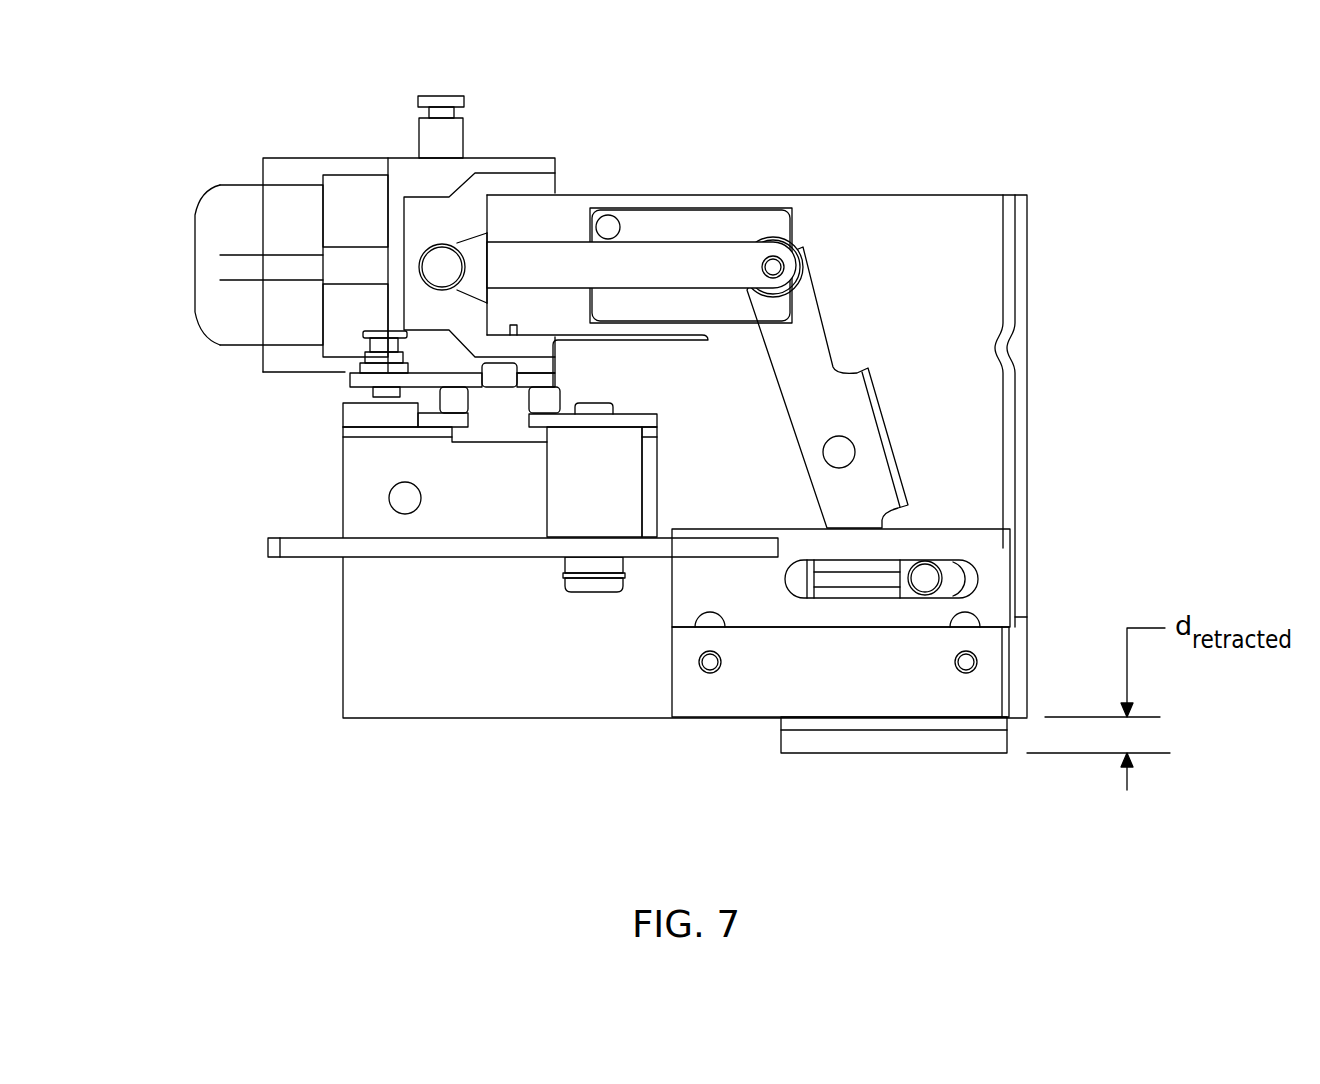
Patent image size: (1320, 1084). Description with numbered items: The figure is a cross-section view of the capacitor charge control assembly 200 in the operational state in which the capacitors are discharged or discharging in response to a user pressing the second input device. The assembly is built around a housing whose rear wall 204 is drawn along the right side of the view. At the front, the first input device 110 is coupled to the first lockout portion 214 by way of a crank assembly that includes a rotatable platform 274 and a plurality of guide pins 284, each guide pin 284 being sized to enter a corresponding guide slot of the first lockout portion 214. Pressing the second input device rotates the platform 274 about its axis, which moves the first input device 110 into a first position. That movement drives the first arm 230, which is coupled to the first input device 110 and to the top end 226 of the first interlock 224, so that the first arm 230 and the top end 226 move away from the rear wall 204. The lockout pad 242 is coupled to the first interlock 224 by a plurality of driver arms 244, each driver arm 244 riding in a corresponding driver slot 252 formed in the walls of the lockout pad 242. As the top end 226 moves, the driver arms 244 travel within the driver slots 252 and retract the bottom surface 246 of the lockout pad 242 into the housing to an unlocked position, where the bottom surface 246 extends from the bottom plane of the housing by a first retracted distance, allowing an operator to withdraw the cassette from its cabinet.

The first input device 110 is at (193, 228).
The capacitor charge control assembly 200 is at (1125, 148).
The rear wall 204 is at (1027, 258).
The first lockout portion 214 is at (299, 538).
The first interlock 224 is at (823, 320).
The top end 226 is at (773, 238).
The first arm 230 is at (692, 268).
The lockout pad 242 is at (748, 776).
The driver arm 244 is at (927, 583).
The bottom surface 246 is at (938, 753).
The driver slot 252 is at (792, 595).
The platform 274 is at (353, 378).
The guide pin 284 is at (543, 480).